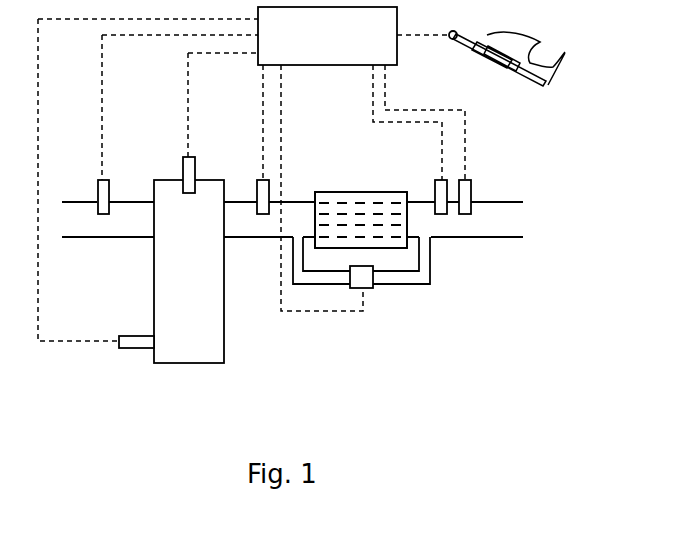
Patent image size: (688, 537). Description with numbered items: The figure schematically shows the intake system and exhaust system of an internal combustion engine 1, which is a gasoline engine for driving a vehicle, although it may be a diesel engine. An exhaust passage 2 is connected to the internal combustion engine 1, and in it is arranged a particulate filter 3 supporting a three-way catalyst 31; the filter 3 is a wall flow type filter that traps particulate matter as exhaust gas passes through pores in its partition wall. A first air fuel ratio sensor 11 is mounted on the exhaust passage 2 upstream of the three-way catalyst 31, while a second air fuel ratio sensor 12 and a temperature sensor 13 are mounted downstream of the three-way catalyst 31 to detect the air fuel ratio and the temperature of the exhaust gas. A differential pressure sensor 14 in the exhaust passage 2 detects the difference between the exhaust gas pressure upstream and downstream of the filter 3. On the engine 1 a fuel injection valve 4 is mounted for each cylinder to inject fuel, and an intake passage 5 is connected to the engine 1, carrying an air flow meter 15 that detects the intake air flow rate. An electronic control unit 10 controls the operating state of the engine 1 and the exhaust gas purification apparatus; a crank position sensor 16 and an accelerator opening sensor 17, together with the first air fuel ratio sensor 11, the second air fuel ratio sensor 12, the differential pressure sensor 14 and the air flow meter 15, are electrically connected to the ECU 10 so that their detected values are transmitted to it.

The internal combustion engine 1 is at (224, 342).
The exhaust passage 2 is at (243, 238).
The particulate filter 3 is at (333, 190).
The three-way catalyst 31 is at (361, 220).
The fuel injection valve 4 is at (183, 162).
The intake passage 5 is at (100, 240).
The electronic control unit 10 is at (258, 66).
The first air fuel ratio sensor 11 is at (257, 182).
The second air fuel ratio sensor 12 is at (435, 180).
The temperature sensor 13 is at (476, 182).
The differential pressure sensor 14 is at (370, 289).
The air flow meter 15 is at (98, 184).
The crank position sensor 16 is at (137, 336).
The accelerator opening sensor 17 is at (448, 38).